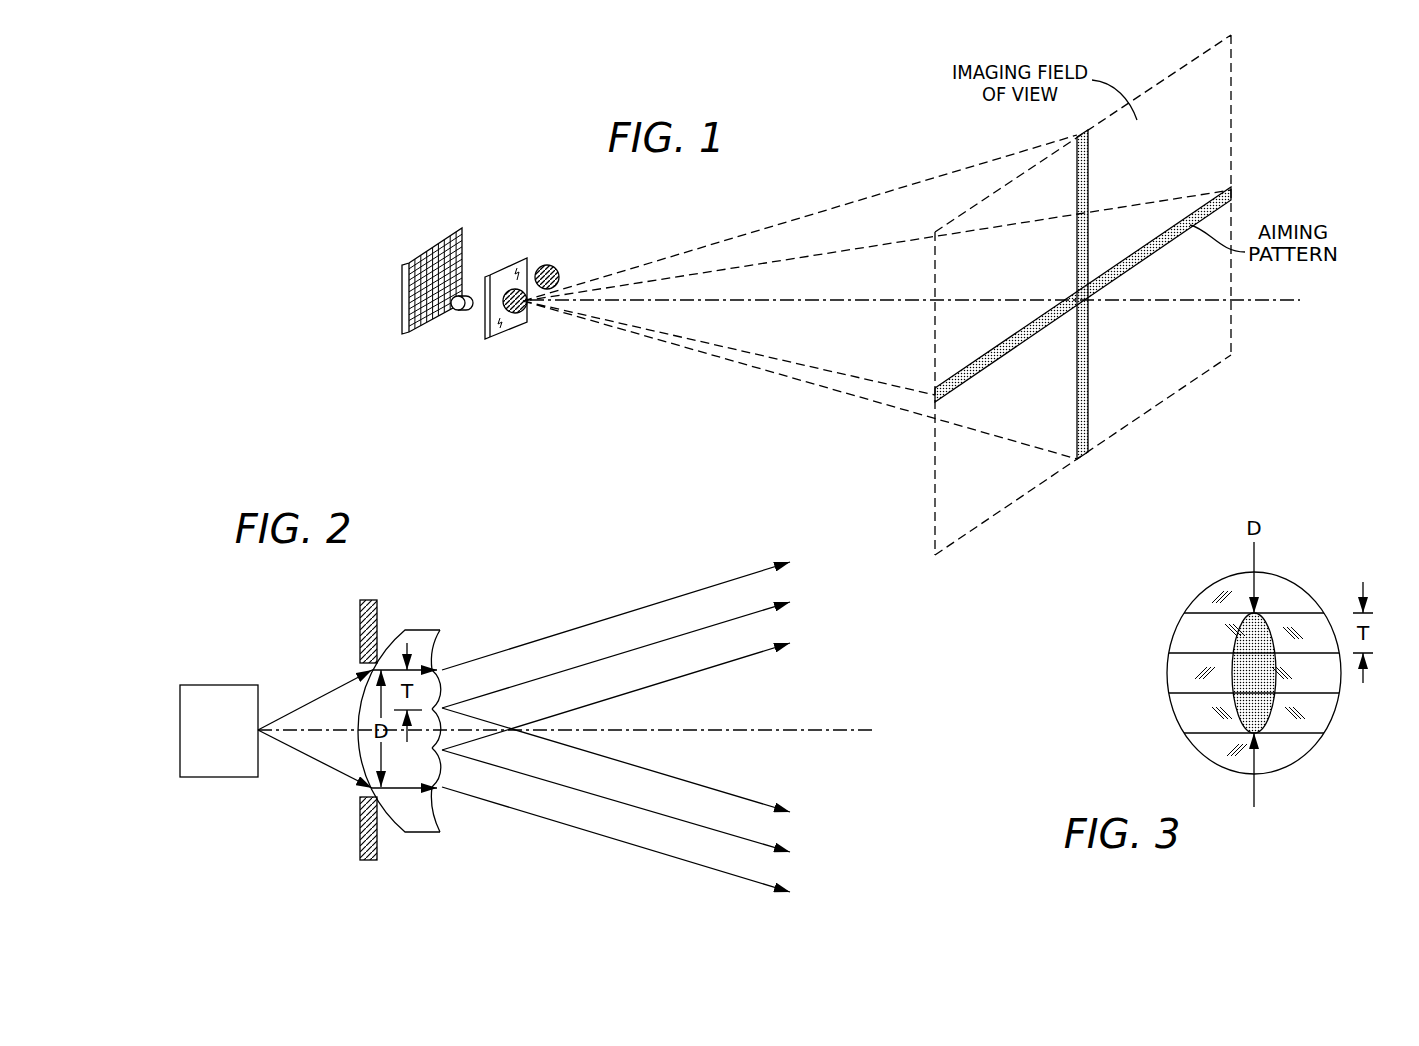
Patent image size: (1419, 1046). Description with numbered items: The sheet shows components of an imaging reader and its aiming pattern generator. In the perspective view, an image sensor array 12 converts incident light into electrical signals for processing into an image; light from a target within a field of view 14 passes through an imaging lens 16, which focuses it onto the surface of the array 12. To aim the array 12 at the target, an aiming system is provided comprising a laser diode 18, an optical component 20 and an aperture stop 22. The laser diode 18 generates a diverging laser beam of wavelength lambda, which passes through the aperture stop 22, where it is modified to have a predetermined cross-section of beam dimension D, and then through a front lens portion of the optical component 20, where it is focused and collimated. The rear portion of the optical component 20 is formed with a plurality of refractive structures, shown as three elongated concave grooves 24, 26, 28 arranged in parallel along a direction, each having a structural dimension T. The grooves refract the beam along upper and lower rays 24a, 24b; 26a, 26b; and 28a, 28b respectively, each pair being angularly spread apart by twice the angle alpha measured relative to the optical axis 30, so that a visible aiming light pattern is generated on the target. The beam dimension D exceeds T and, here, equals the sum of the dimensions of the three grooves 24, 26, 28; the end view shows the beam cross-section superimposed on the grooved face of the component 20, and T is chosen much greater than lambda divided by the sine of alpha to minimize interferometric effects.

In FIG. 1, the image sensor array 12 is at (402, 285).
In FIG. 1, the field of view 14 is at (1223, 118).
In FIG. 1, the imaging lens 16 is at (556, 266).
In FIG. 1, the laser diode 18 is at (455, 311).
In FIG. 2, the laser diode 18 is at (243, 685).
In FIG. 1, the optical component 20 is at (517, 314).
In FIG. 2, the optical component 20 is at (443, 701).
In FIG. 3, the optical component 20 is at (1258, 693).
In FIG. 1, the aperture stop 22 is at (514, 258).
In FIG. 2, the aperture stop 22 is at (358, 622).
In FIG. 2, the elongated concave groove 24 is at (441, 688).
In FIG. 3, the elongated concave groove 24 is at (1177, 630).
In FIG. 2, the elongated concave groove 26 is at (443, 719).
In FIG. 3, the elongated concave groove 26 is at (1168, 698).
In FIG. 2, the elongated concave groove 28 is at (441, 772).
In FIG. 3, the elongated concave groove 28 is at (1195, 743).
In FIG. 2, the upper ray 24a is at (688, 593).
In FIG. 2, the upper ray 26a is at (680, 636).
In FIG. 2, the upper ray 28a is at (710, 668).
In FIG. 2, the lower ray 24b is at (693, 781).
In FIG. 2, the lower ray 26b is at (651, 812).
In FIG. 2, the lower ray 28b is at (640, 848).
In FIG. 2, the optical axis 30 is at (833, 727).